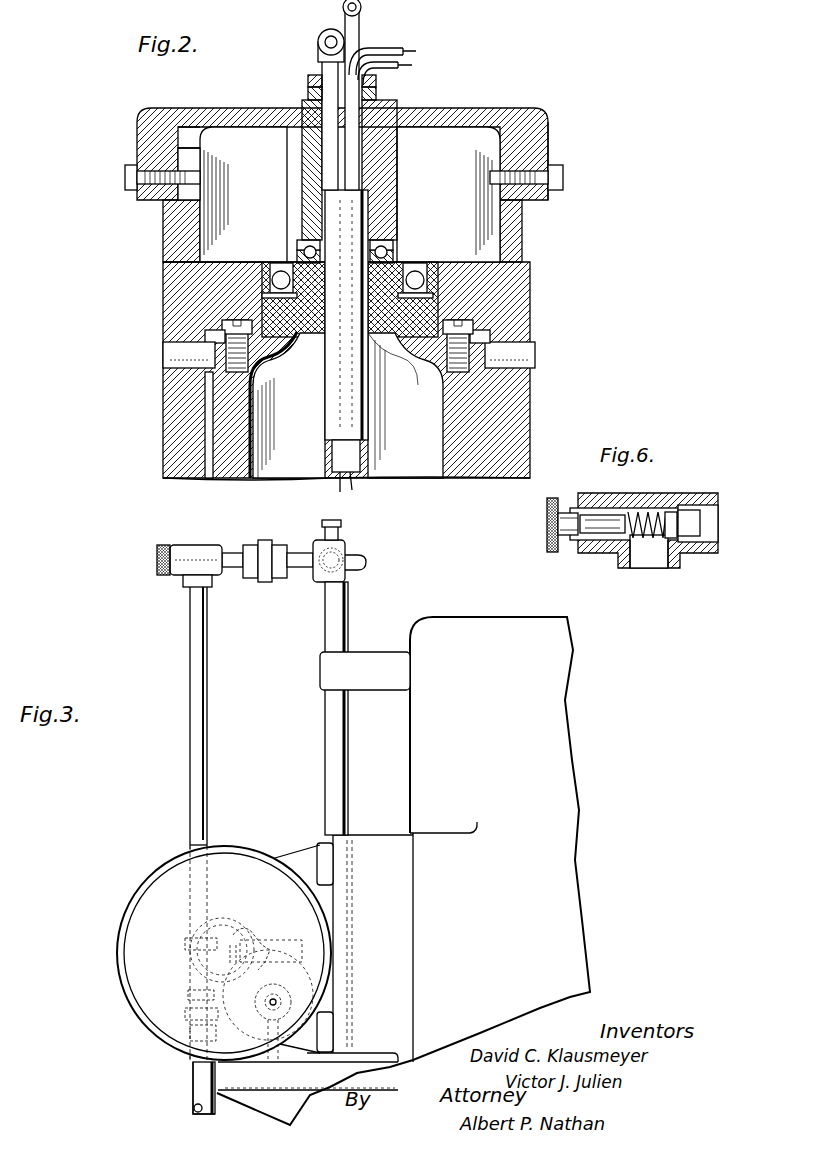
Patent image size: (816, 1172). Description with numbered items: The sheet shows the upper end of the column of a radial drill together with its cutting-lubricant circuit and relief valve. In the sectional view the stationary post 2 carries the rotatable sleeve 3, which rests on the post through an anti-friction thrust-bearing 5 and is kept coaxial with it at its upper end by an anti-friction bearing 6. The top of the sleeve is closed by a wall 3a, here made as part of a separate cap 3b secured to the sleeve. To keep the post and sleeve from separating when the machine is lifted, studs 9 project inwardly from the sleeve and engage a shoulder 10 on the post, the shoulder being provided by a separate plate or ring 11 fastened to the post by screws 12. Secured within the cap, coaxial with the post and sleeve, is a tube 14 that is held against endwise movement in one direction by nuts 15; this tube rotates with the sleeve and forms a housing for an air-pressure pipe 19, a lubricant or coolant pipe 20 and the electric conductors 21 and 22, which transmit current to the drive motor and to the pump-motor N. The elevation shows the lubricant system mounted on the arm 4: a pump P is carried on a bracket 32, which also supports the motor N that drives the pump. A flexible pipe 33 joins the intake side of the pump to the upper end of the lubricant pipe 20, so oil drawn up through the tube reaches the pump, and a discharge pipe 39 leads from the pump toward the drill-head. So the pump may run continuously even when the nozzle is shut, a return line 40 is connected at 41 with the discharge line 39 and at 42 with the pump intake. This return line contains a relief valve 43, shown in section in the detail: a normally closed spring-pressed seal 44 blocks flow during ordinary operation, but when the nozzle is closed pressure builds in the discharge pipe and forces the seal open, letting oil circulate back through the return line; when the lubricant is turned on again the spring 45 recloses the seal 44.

In FIG. 2, the post 2 is at (240, 470).
In FIG. 2, the rotatable sleeve 3 is at (512, 296).
In FIG. 2, the wall 3a is at (450, 104).
In FIG. 2, the cap 3b is at (549, 137).
In FIG. 3, the arm 4 is at (403, 871).
In FIG. 2, the anti-friction thrust-bearing 5 is at (394, 253).
In FIG. 2, the anti-friction bearing 6 is at (275, 265).
In FIG. 2, the stud 9 is at (165, 357).
In FIG. 2, the shoulder 10 is at (210, 337).
In FIG. 2, the plate or ring 11 is at (203, 323).
In FIG. 2, the screws 12 is at (198, 302).
In FIG. 2, the tube 14 is at (346, 341).
In FIG. 2, the nuts 15 is at (308, 82).
In FIG. 2, the air-pressure pipe 19 is at (320, 70).
In FIG. 2, the lubricant or coolant pipe 20 is at (359, 42).
In FIG. 2, the electric conductor 21 is at (408, 68).
In FIG. 2, the electric conductor 22 is at (406, 50).
In FIG. 3, the bracket 32 is at (398, 994).
In FIG. 3, the flexible pipe 33 is at (198, 1091).
In FIG. 3, the discharge pipe 39 is at (346, 803).
In FIG. 3, the return line 40 is at (235, 553).
In FIG. 3, the connection to discharge line 41 is at (322, 548).
In FIG. 3, the connection to pump intake 42 is at (190, 937).
In FIG. 6, the relief valve 43 is at (658, 493).
In FIG. 3, the relief valve 43 is at (190, 548).
In FIG. 6, the spring-pressed seal 44 is at (675, 523).
In FIG. 6, the spring 45 is at (648, 540).
In FIG. 3, the pump-motor N is at (118, 930).
In FIG. 3, the pump P is at (283, 945).